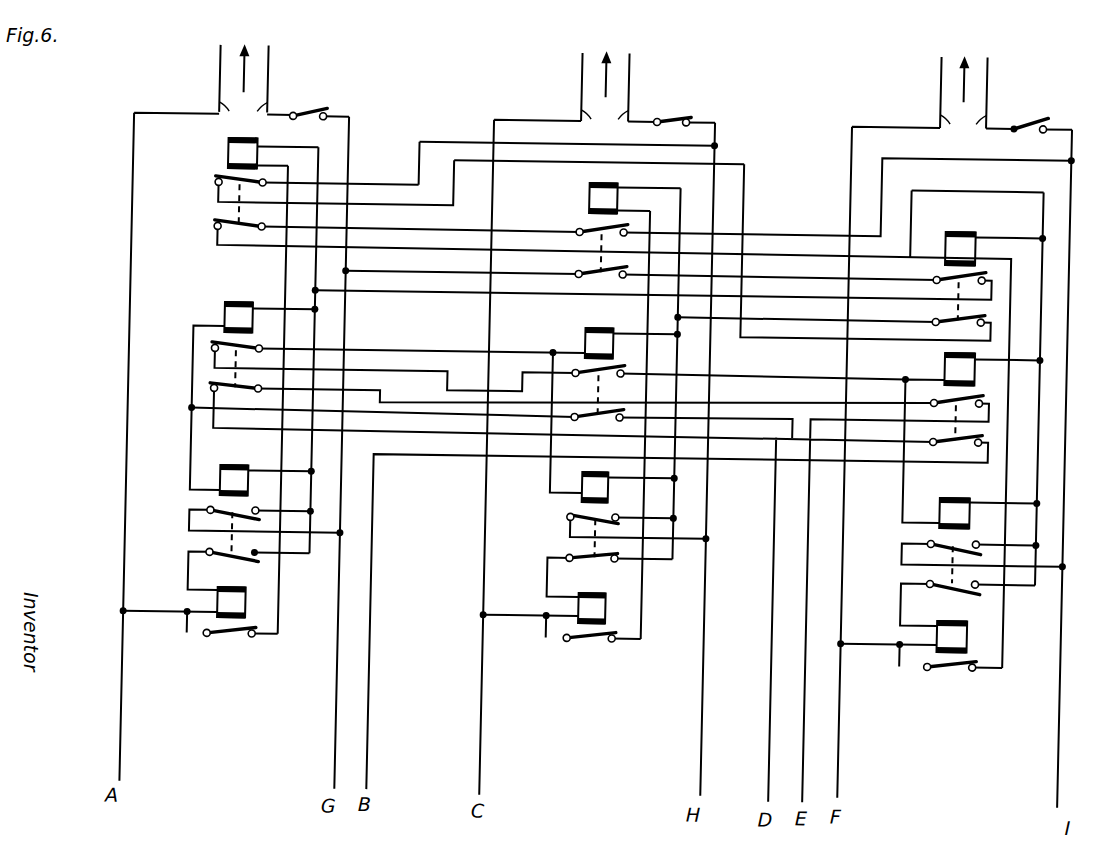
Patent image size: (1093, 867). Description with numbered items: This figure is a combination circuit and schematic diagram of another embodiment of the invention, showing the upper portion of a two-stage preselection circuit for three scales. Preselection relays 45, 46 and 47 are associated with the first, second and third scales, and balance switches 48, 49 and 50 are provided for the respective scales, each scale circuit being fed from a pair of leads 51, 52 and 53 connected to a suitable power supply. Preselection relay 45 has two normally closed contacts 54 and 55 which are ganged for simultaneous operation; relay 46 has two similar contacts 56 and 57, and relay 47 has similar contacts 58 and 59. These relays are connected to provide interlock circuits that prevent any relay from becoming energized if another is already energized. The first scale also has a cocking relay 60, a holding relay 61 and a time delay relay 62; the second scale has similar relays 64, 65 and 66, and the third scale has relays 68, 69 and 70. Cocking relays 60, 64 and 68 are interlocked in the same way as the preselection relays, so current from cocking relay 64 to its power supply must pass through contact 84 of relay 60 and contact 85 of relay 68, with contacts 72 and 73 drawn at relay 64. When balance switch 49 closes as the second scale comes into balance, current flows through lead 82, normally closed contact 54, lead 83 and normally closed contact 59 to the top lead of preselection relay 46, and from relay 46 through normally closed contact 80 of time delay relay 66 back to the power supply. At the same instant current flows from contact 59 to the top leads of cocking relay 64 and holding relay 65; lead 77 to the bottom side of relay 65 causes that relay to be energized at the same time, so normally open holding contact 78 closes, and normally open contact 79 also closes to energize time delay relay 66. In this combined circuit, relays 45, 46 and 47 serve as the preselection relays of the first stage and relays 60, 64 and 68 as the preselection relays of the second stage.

The preselection relay 45 is at (229, 151).
The preselection relay 46 is at (591, 192).
The preselection relay 47 is at (946, 240).
The balance switch 48 is at (318, 105).
The balance switch 49 is at (671, 116).
The balance switch 50 is at (1033, 119).
The pair of leads 51 is at (244, 85).
The pair of leads 52 is at (605, 91).
The pair of leads 53 is at (964, 97).
The normally closed contact 54 is at (218, 179).
The normally closed contact 55 is at (218, 220).
The normally closed contact 56 is at (582, 227).
The normally closed contact 57 is at (582, 270).
The normally closed contact 58 is at (938, 277).
The normally closed contact 59 is at (938, 319).
The cocking relay 60 is at (227, 312).
The holding relay 61 is at (222, 471).
The time delay relay 62 is at (240, 588).
The cocking relay 64 is at (588, 334).
The holding relay 65 is at (590, 480).
The time delay relay 66 is at (600, 604).
The cocking relay 68 is at (936, 362).
The holding relay 69 is at (944, 498).
The time delay relay 70 is at (954, 622).
The contact 72 is at (614, 369).
The contact 73 is at (605, 415).
The lead 77 is at (558, 489).
The holding contact 78 is at (606, 518).
The normally open contact 79 is at (603, 558).
The normally closed contact 80 is at (591, 636).
The lead 82 is at (452, 138).
The lead 83 is at (454, 204).
The normally closed contact 84 is at (237, 346).
The normally closed contact 85 is at (966, 396).